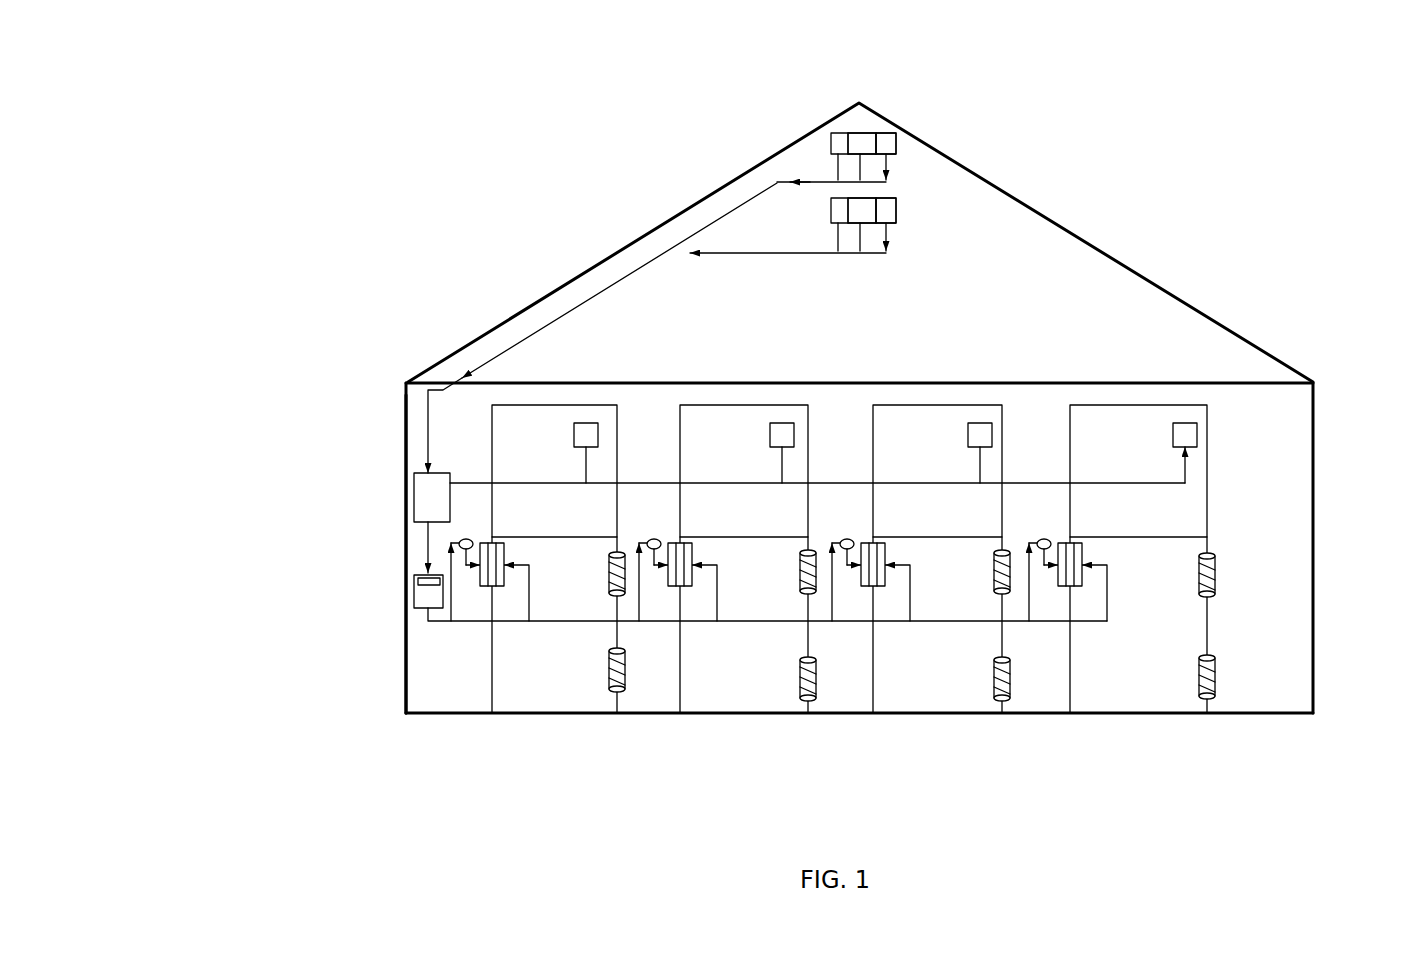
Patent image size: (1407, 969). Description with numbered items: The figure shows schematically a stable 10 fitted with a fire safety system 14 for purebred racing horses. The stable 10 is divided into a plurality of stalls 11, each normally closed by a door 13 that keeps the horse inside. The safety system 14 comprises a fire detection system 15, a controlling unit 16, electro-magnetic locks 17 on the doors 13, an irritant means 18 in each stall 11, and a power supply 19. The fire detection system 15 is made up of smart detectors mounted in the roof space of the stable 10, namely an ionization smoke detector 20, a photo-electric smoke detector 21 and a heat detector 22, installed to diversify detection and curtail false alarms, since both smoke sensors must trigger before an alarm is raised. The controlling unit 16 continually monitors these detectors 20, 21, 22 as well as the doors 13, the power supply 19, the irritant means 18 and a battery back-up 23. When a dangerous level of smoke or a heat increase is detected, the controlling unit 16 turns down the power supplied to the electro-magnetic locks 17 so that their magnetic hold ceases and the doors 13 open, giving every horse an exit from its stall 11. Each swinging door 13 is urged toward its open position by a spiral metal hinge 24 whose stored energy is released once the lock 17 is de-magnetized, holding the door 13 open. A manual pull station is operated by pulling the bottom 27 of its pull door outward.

The stable 10 is at (1112, 250).
The stall 11 is at (498, 450).
The door 13 is at (693, 702).
The safety system 14 is at (404, 412).
The fire detection system 15 is at (612, 283).
The controlling unit 16 is at (414, 494).
The electro-magnetic lock 17 is at (493, 590).
The irritant means 18 is at (586, 423).
The power supply 19 is at (418, 603).
The ionization smoke detector 20 is at (831, 212).
The photo-electric smoke detector 21 is at (868, 207).
The heat detector 22 is at (897, 218).
The battery back-up 23 is at (417, 582).
The spiral metal hinge 24 is at (609, 577).
The bottom of the pull door 27 is at (465, 539).